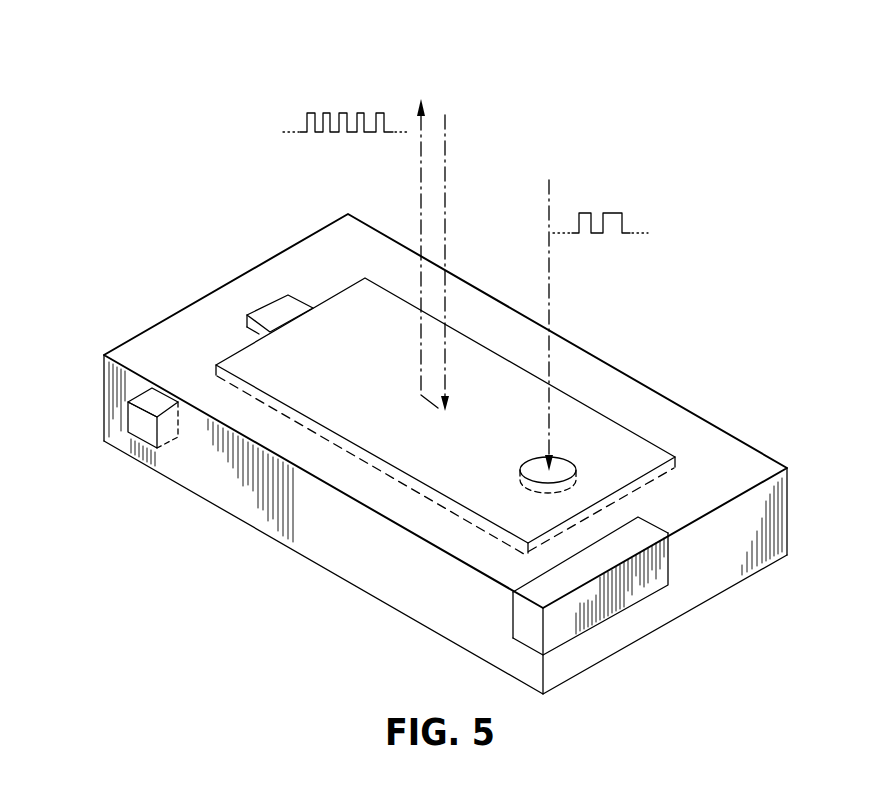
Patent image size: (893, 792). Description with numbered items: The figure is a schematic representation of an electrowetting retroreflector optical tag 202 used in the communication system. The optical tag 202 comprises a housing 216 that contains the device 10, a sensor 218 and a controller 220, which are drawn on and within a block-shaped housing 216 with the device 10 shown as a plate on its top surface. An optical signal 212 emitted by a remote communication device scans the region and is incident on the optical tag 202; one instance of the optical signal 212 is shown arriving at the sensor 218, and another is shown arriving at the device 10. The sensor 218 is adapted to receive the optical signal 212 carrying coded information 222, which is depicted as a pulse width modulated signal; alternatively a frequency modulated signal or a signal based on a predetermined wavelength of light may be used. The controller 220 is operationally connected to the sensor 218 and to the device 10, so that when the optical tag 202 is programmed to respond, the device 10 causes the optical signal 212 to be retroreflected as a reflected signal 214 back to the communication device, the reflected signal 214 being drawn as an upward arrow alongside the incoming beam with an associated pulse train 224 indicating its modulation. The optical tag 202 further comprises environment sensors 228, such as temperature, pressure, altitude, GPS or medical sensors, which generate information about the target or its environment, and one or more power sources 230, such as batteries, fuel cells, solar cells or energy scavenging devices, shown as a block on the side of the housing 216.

The electrowetting retroreflector optical tag 202 is at (190, 181).
The housing 216 is at (187, 312).
The device 10 is at (609, 416).
The sensor 218 is at (532, 466).
The environment sensors 228 is at (277, 317).
The controller 220 is at (142, 425).
The power sources 230 is at (575, 613).
The optical signal 212 is at (446, 232).
The reflected signal 214 is at (420, 205).
The output signal 224 is at (306, 113).
The coded information 222 is at (621, 213).